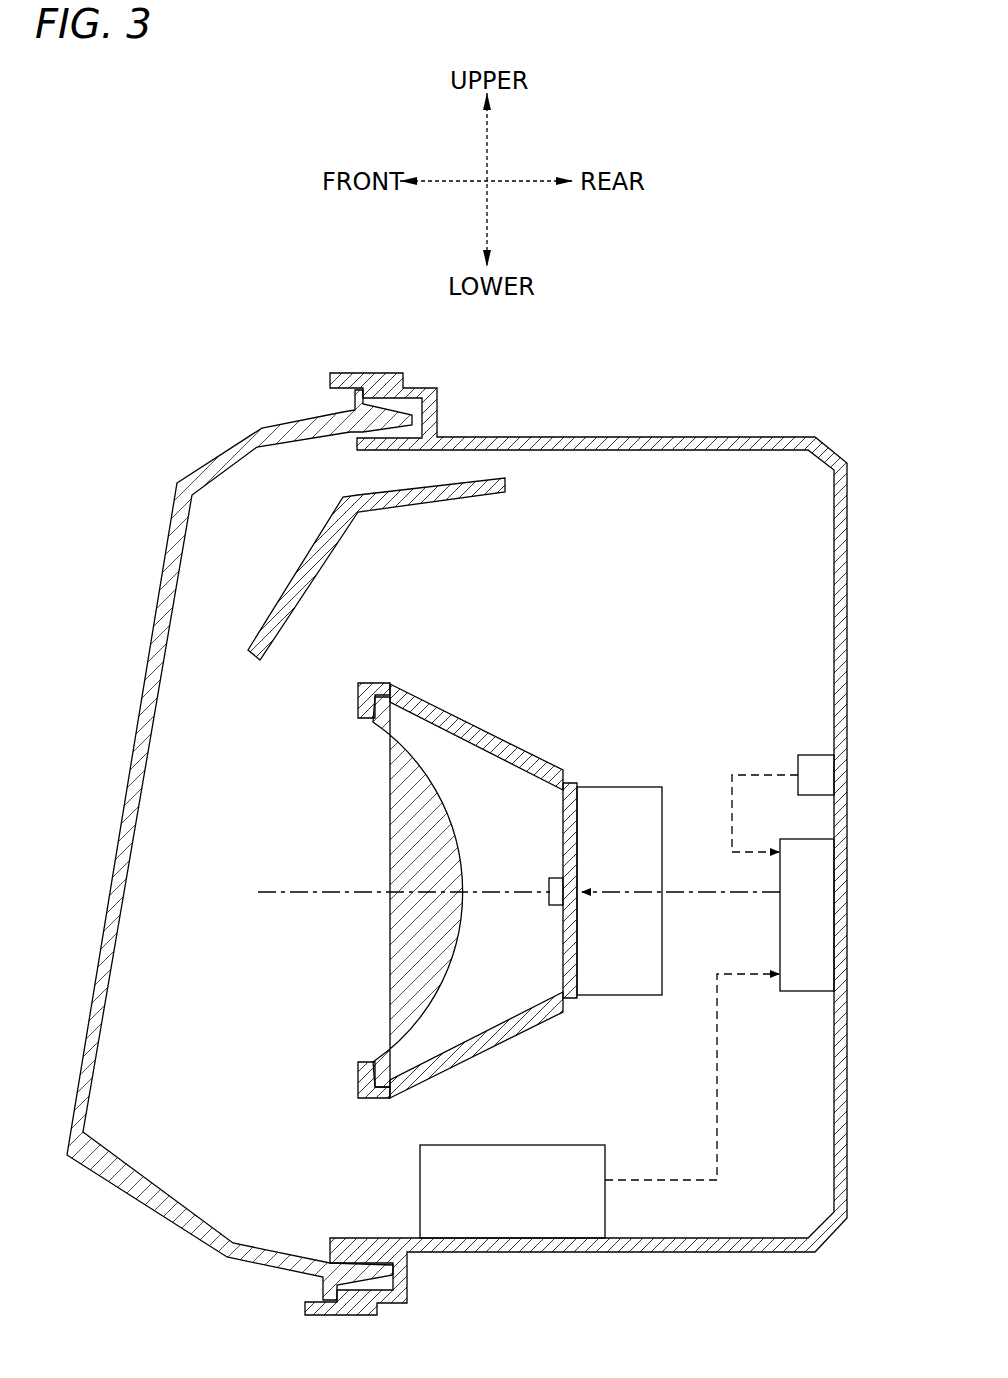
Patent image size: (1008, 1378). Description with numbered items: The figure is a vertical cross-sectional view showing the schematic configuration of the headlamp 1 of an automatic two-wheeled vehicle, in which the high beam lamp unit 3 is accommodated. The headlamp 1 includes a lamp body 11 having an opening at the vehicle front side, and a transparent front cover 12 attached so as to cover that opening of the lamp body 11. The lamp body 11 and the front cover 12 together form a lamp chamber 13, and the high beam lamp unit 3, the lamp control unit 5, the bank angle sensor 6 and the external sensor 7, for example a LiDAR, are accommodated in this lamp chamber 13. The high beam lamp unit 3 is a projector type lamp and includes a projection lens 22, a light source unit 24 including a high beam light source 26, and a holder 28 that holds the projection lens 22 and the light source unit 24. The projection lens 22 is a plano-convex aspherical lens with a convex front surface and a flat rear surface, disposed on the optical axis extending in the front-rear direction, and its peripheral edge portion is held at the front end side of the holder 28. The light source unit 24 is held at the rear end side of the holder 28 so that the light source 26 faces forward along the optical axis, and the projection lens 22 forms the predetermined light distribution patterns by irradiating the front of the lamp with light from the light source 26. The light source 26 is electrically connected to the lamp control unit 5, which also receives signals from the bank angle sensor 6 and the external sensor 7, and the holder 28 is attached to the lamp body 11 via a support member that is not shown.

The headlamp 1 is at (677, 347).
The high beam lamp unit 3 is at (289, 805).
The lamp control unit 5 is at (833, 927).
The bank angle sensor 6 is at (833, 773).
The external sensor 7 is at (508, 1205).
The lamp body 11 is at (758, 438).
The front cover 12 is at (237, 442).
The lamp chamber 13 is at (549, 487).
The projection lens 22 is at (317, 968).
The light source unit 24 is at (583, 775).
The light source 26 is at (546, 857).
The holder 28 is at (483, 733).